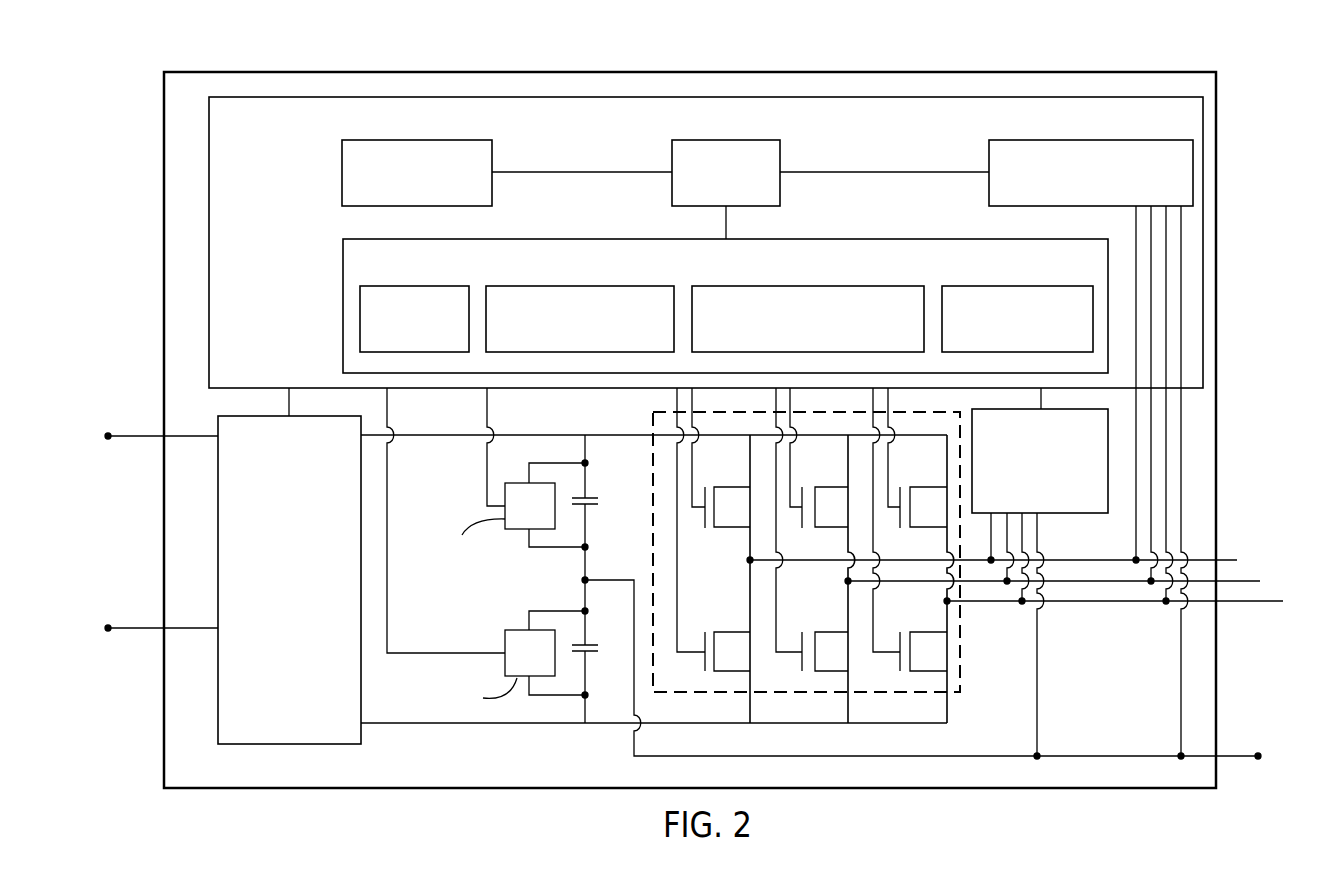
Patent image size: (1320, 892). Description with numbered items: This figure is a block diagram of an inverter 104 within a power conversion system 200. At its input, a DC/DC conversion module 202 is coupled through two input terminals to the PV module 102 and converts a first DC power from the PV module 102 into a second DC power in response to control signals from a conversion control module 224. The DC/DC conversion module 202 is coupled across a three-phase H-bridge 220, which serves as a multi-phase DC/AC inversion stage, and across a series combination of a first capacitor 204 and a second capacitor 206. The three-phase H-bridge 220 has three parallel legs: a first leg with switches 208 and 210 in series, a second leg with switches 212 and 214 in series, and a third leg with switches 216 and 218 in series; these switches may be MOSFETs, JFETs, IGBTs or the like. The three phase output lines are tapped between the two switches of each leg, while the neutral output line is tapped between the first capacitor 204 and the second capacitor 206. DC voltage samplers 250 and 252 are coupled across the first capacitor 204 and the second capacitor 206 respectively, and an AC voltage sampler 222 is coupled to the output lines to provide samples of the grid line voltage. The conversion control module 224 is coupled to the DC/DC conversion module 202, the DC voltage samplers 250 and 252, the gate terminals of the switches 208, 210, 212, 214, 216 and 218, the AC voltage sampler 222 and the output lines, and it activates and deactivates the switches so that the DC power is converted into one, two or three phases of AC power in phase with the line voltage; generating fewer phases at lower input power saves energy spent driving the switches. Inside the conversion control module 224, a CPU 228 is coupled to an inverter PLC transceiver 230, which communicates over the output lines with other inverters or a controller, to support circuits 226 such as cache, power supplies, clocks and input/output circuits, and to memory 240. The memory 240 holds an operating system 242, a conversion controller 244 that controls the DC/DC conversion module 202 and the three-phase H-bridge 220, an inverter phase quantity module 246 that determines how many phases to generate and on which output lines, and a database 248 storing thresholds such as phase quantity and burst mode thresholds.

The power conversion system 200 is at (1281, 130).
The inverter 104 is at (1022, 788).
The PV module 102 is at (148, 532).
The conversion control module 224 is at (916, 130).
The support circuits 226 is at (480, 187).
The central processing unit 228 is at (766, 186).
The inverter power line communication transceiver 230 is at (1178, 187).
The memory 240 is at (818, 273).
The operating system 242 is at (455, 333).
The conversion controller 244 is at (661, 335).
The inverter phase quantity module 246 is at (911, 335).
The database 248 is at (1080, 333).
The DC/DC conversion module 202 is at (302, 608).
The first capacitor 204 is at (592, 499).
The second capacitor 206 is at (592, 647).
The switch 208 is at (733, 486).
The switch 210 is at (733, 630).
The switch 212 is at (831, 486).
The switch 214 is at (831, 630).
The switch 216 is at (930, 486).
The switch 218 is at (930, 630).
The three-phase H-bridge 220 is at (961, 642).
The AC voltage sampler 222 is at (1054, 495).
The DC voltage sampler 250 is at (544, 518).
The DC voltage sampler 252 is at (544, 665).